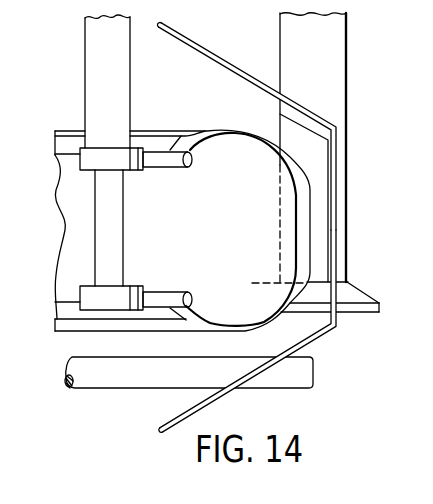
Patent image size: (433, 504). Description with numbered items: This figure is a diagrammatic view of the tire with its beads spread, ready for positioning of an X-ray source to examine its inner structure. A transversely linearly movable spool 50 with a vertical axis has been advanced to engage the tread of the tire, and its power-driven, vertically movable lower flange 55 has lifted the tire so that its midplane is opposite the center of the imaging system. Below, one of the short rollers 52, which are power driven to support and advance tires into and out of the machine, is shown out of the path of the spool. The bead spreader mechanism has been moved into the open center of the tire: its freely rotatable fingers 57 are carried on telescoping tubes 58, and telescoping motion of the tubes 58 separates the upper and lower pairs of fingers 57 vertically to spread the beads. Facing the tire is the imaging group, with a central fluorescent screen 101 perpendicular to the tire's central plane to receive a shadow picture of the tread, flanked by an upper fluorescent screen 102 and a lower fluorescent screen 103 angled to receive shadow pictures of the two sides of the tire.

The transversely linearly movable spool 50 is at (313, 43).
The short roller 52 is at (113, 371).
The lower flange 55 is at (370, 297).
The finger 57 is at (167, 292).
The telescoping tube 58 is at (112, 61).
The central fluorescent screen 101 is at (281, 115).
The upper fluorescent screen 102 is at (237, 72).
The lower fluorescent screen 103 is at (310, 333).